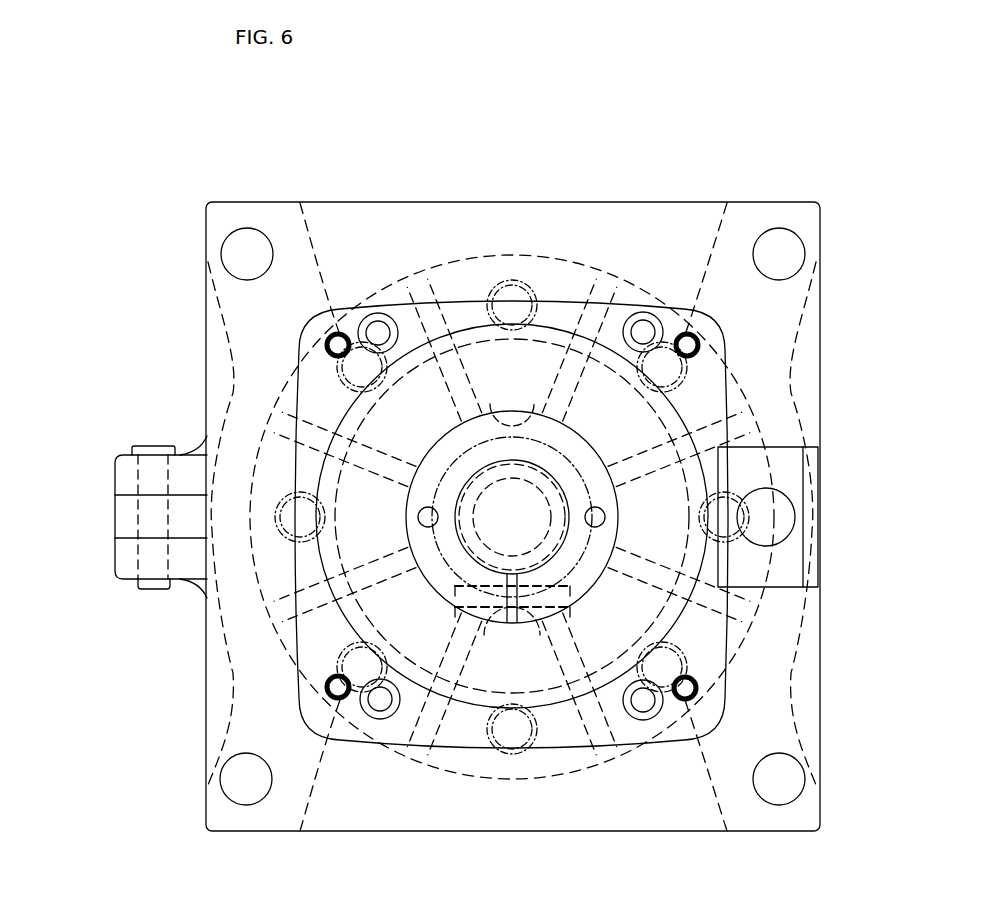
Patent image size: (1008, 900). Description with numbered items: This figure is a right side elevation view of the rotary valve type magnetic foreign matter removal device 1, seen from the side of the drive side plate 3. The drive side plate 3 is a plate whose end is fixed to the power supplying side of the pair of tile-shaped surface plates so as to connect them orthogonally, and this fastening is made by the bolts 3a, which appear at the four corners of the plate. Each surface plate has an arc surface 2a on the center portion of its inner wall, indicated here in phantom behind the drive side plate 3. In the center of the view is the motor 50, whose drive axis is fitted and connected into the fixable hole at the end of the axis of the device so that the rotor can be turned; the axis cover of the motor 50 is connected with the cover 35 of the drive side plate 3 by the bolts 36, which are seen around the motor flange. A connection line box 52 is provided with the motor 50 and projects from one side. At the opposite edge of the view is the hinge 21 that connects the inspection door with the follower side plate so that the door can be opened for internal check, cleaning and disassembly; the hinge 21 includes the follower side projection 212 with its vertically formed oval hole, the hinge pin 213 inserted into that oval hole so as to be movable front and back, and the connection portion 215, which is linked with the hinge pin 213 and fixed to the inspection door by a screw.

The rotary valve type magnetic foreign matter removal device 1 is at (762, 162).
The arc surface 2a is at (207, 305).
The drive side plate 3 is at (690, 220).
The bolts 3a is at (245, 253).
The hinge 21 is at (117, 483).
The follower side projection 212 is at (125, 556).
The hinge pin 213 is at (153, 452).
The connection portion 215 is at (125, 517).
The cover 35 is at (565, 318).
The bolts 36 is at (380, 333).
The motor 50 is at (512, 422).
The connection line box 52 is at (790, 480).